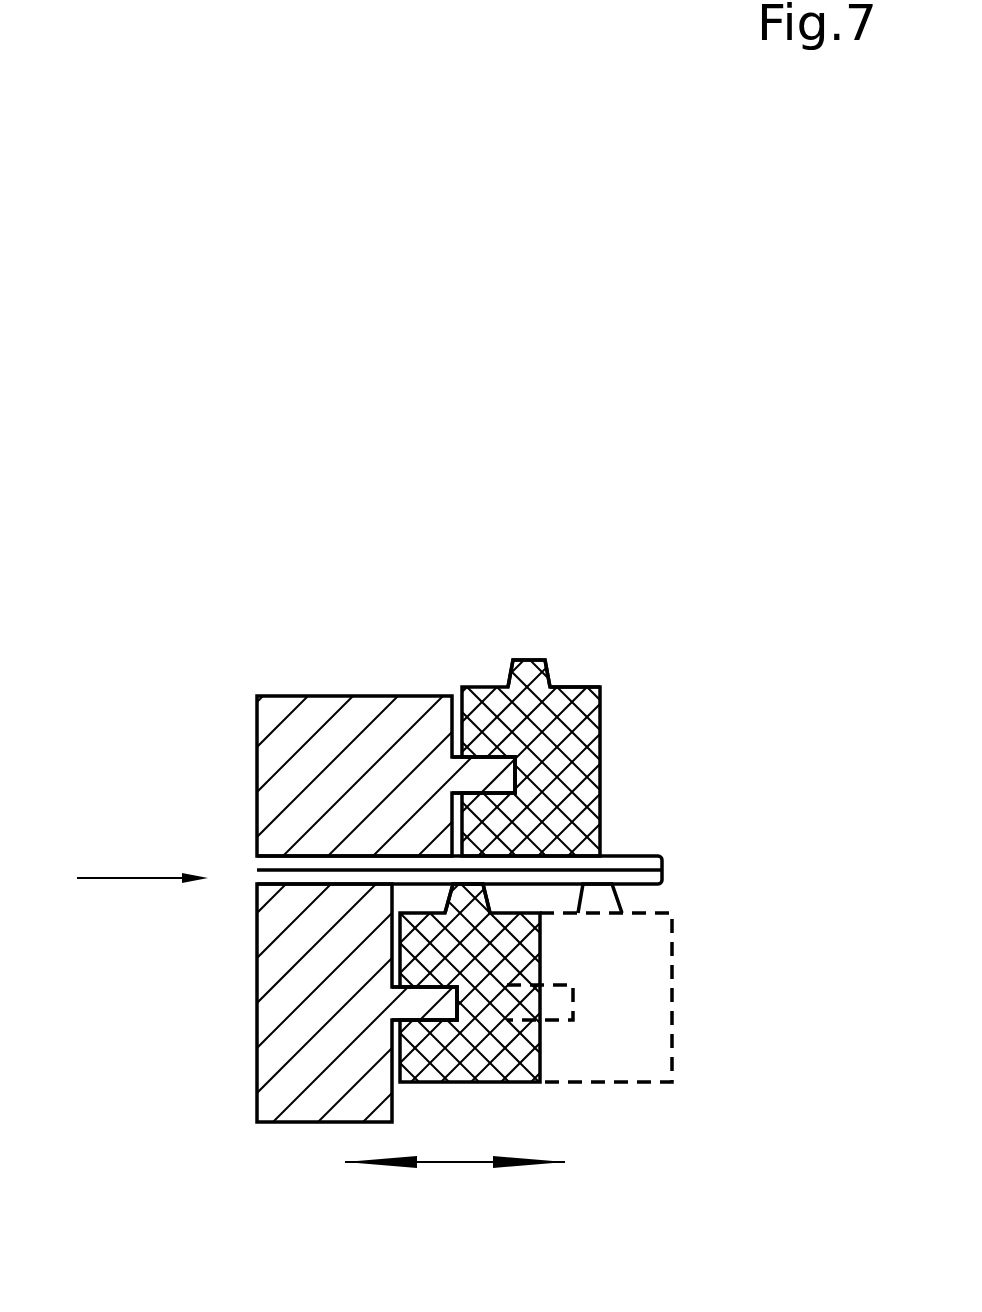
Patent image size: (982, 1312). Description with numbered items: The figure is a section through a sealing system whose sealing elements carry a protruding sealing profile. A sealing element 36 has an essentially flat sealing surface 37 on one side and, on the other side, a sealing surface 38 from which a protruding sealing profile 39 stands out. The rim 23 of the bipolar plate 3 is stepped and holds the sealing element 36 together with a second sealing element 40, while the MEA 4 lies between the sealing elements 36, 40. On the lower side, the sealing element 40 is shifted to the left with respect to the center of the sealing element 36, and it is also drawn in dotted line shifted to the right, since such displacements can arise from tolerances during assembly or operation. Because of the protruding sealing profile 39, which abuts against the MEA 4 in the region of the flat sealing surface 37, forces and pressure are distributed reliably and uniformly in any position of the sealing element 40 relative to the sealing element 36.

The bipolar plate 3 is at (357, 766).
The MEA 4 is at (126, 879).
The rim 23 is at (460, 757).
The sealing element 36 is at (563, 755).
The flat sealing surface 37 is at (556, 857).
The sealing surface 38 is at (565, 685).
The protruding sealing profile 39 is at (520, 658).
The sealing element 40 is at (630, 1043).